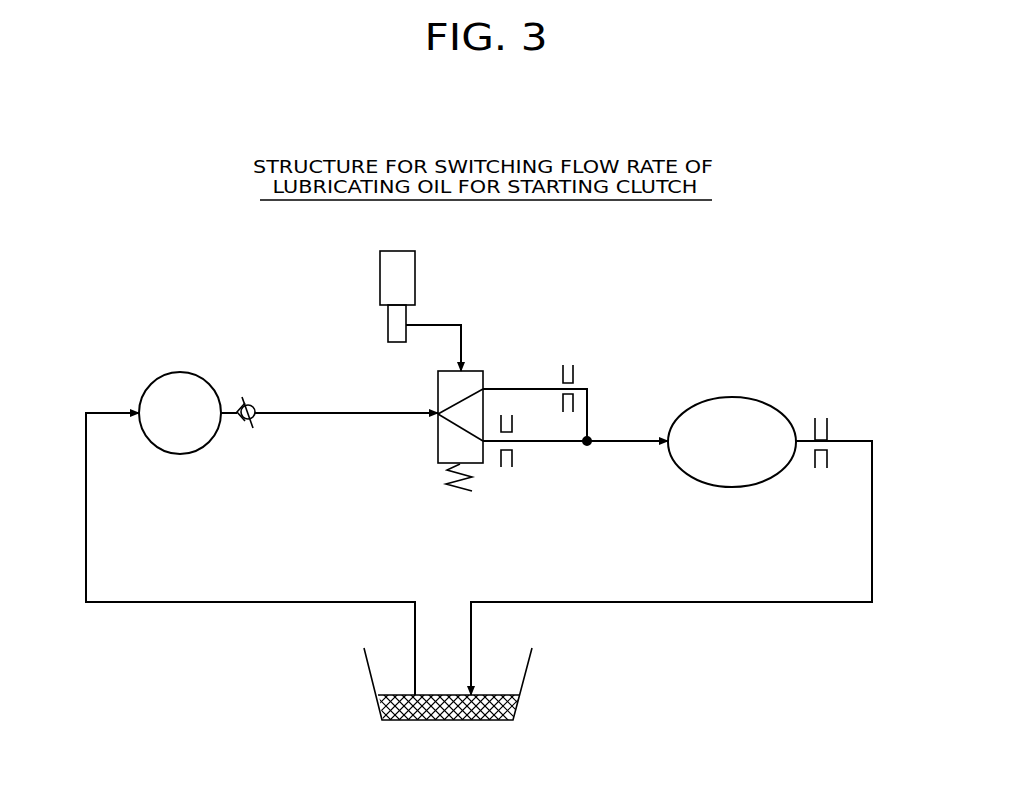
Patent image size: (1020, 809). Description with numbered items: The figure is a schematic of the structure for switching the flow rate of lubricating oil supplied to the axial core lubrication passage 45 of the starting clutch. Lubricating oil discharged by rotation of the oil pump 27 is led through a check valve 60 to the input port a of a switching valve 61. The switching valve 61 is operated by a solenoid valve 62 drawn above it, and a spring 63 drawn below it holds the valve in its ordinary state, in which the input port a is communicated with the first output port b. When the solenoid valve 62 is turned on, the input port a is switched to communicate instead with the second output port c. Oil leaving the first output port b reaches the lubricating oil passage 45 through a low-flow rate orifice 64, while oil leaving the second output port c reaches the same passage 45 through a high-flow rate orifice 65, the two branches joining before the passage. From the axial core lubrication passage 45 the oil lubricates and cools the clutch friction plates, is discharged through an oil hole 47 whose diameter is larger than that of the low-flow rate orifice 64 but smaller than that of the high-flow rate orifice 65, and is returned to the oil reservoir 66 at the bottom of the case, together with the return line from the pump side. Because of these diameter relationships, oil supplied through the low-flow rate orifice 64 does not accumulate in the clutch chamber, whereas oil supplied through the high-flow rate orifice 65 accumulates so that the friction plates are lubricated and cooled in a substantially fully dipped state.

The oil pump 27 is at (176, 372).
The check valve 60 is at (245, 398).
The switching valve 61 is at (446, 372).
The solenoid valve 62 is at (416, 278).
The spring 63 is at (456, 493).
The low-flow rate orifice 64 is at (577, 374).
The high-flow rate orifice 65 is at (514, 463).
The lubricating oil passage (axial core lubrication) 45 is at (728, 397).
The oil hole 47 is at (829, 440).
The oil reservoir 66 is at (524, 688).
The input port a is at (437, 418).
The first output port b is at (486, 388).
The second output port c is at (485, 444).